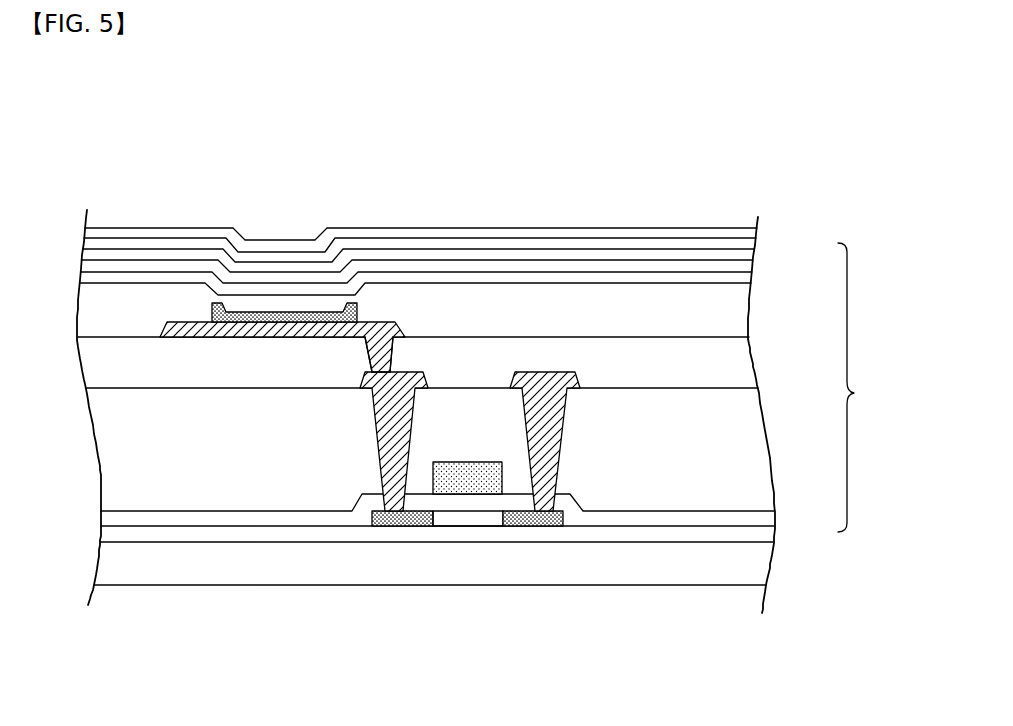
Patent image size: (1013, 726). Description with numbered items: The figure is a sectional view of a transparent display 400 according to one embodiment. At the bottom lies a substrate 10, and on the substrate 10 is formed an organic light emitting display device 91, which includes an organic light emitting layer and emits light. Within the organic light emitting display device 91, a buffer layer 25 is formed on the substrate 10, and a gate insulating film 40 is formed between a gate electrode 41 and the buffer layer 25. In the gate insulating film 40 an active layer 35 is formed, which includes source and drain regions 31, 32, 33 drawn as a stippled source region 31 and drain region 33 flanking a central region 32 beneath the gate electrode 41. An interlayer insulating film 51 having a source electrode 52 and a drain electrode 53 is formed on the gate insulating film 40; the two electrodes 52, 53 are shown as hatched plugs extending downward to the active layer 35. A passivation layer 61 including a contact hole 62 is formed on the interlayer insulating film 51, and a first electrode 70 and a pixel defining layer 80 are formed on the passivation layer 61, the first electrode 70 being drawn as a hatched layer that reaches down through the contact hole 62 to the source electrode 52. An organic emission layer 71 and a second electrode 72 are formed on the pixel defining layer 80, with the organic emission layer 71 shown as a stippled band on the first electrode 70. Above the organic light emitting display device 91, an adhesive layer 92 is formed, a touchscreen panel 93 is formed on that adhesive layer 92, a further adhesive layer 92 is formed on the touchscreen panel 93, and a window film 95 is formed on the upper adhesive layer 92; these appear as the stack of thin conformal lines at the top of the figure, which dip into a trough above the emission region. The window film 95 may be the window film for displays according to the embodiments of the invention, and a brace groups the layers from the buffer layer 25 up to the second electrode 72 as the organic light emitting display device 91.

The transparent display 400 is at (566, 168).
The window film 95 is at (650, 237).
The adhesive layer 92 is at (678, 247).
The touchscreen panel 93 is at (697, 257).
The second electrode 72 is at (735, 278).
The pixel defining layer 80 is at (745, 316).
The passivation layer 61 is at (745, 373).
The interlayer insulating film 51 is at (752, 449).
The gate insulating film 40 is at (763, 518).
The buffer layer 25 is at (763, 535).
The substrate 10 is at (760, 572).
The organic light emitting display device 91 is at (866, 387).
The first electrode 70 is at (177, 322).
The organic emission layer 71 is at (240, 305).
The contact hole 62 is at (383, 348).
The source electrode 52 is at (395, 382).
The gate electrode 41 is at (473, 473).
The drain electrode 53 is at (543, 382).
The source region 31 is at (410, 527).
The channel region 32 is at (463, 527).
The drain region 33 is at (520, 527).
The active layer 35 is at (467, 600).